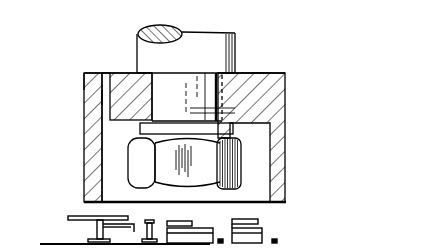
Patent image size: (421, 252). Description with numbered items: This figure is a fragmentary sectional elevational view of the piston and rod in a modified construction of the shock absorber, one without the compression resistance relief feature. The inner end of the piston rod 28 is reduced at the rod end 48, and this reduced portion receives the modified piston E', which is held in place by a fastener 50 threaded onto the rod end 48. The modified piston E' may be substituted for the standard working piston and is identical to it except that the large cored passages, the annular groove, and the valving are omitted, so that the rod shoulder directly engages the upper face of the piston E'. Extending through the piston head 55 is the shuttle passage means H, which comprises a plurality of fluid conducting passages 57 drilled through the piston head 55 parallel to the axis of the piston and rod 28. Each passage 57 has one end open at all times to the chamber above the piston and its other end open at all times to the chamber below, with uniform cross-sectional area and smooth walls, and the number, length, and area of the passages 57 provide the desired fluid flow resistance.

The piston rod 28 is at (141, 31).
The reduced rod end 48 is at (170, 78).
The shuttle passage means H is at (105, 69).
The piston head 55 is at (84, 75).
The fluid conducting passages 57 is at (101, 97).
The modified piston E' is at (156, 137).
The fastener 50 is at (243, 158).